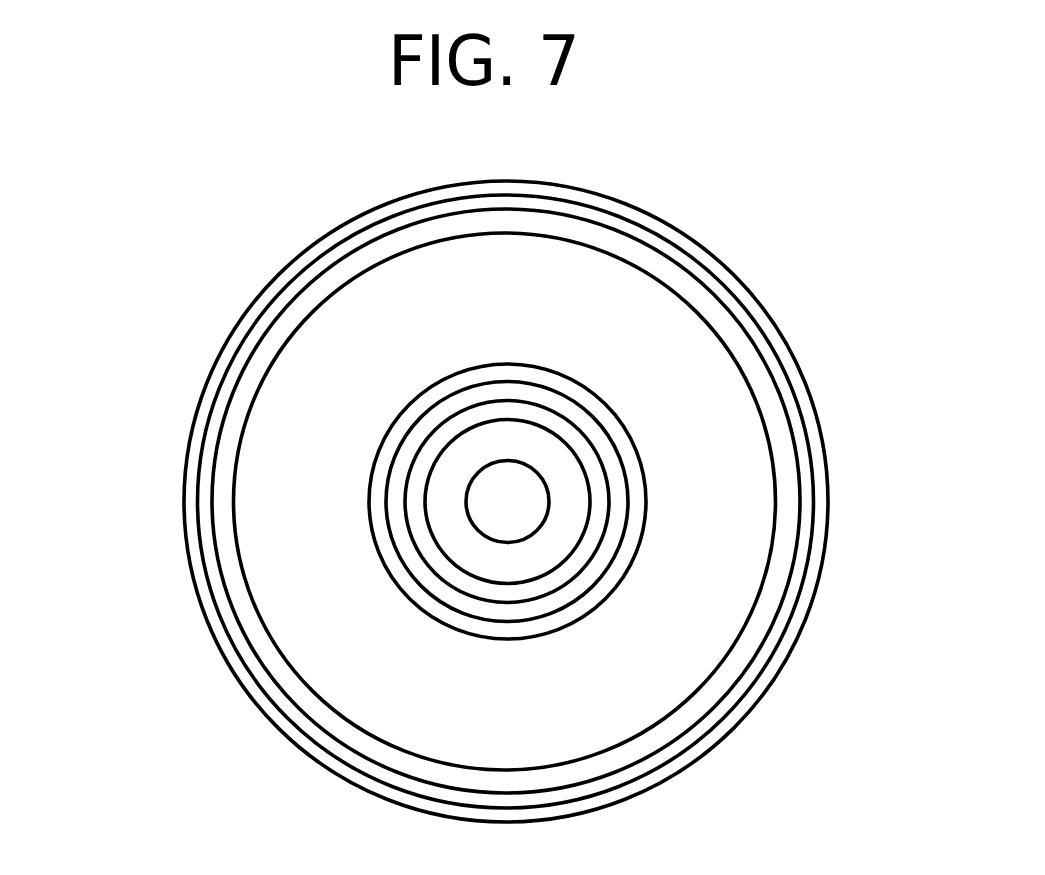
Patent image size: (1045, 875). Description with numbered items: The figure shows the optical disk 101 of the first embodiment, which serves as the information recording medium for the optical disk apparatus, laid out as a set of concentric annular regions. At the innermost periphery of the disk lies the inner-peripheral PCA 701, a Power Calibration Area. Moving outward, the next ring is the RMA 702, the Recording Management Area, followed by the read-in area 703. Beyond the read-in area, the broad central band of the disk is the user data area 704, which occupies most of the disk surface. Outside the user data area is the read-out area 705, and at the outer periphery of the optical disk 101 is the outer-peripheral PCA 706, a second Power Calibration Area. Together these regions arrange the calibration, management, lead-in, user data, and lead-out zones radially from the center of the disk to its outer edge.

The optical disk 101 is at (183, 503).
The inner-peripheral PCA 701 is at (600, 497).
The RMA 702 is at (580, 418).
The read-in area 703 is at (497, 372).
The user data area 704 is at (717, 640).
The read-out area 705 is at (767, 393).
The outer-peripheral PCA 706 is at (607, 218).